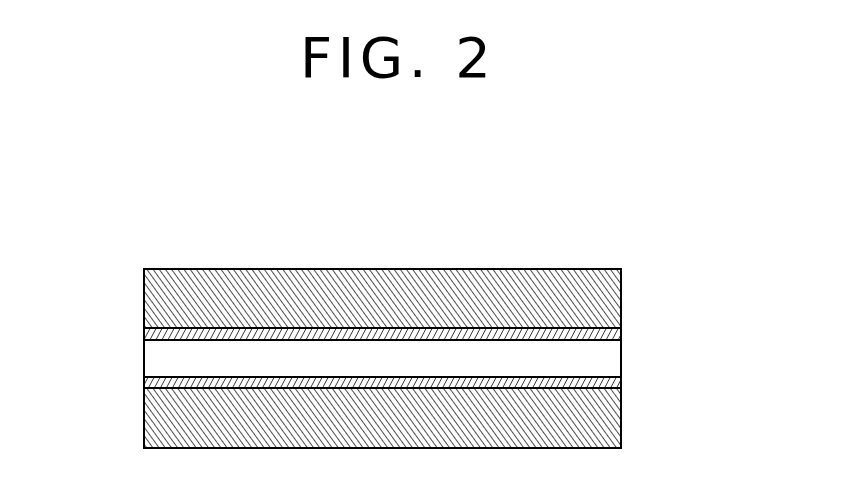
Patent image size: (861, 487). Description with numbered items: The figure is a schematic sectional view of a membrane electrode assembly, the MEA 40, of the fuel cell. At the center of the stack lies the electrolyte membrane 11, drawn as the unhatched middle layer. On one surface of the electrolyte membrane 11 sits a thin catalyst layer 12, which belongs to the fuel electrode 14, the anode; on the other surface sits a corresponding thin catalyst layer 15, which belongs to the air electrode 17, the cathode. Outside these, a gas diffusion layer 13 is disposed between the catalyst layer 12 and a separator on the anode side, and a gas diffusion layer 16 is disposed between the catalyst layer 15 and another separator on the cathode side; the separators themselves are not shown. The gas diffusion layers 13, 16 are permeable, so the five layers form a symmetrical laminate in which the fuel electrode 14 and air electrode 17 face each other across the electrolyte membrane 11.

The membrane electrode assembly 40 is at (379, 212).
The gas diffusion layer 13 is at (621, 296).
The catalyst layer 12 is at (621, 330).
The electrolyte membrane 11 is at (154, 354).
The catalyst layer 15 is at (621, 378).
The gas diffusion layer 16 is at (621, 415).
The fuel electrode 14 is at (752, 264).
The air electrode 17 is at (752, 352).